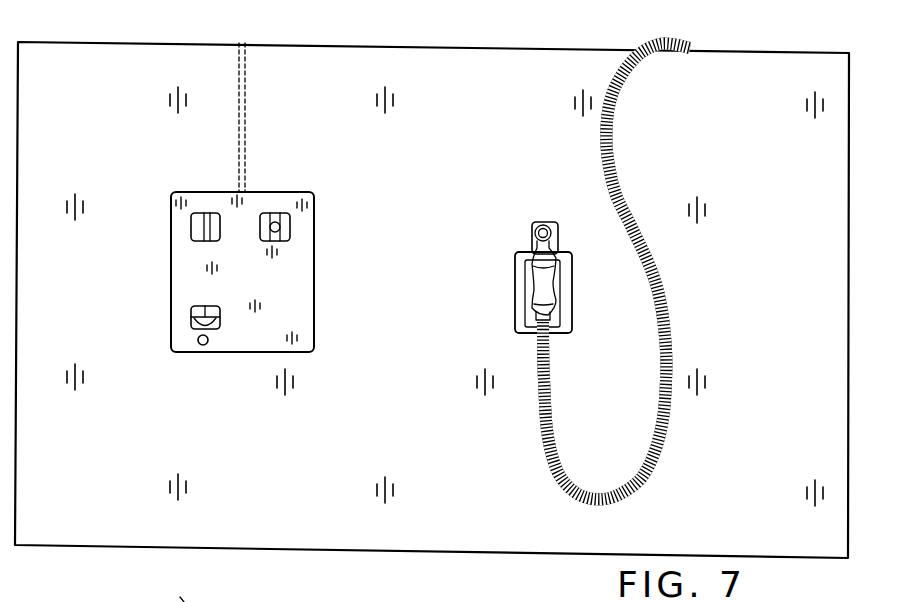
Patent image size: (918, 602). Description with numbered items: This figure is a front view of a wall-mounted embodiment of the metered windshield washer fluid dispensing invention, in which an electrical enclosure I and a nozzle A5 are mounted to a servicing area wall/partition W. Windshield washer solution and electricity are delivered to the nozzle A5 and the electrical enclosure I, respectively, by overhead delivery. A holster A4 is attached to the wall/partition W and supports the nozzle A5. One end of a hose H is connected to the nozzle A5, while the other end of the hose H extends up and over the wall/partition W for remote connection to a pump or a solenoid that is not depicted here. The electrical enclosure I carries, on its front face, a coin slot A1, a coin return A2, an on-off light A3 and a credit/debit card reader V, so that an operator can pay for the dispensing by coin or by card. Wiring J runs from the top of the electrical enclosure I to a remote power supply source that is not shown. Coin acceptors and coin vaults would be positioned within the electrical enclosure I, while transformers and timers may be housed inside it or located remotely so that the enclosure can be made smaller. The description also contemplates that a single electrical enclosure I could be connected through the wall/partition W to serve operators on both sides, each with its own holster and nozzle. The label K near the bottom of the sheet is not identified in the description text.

The wall/partition W is at (846, 552).
The electrical enclosure I is at (170, 196).
The wiring J is at (239, 67).
The coin slot A1 is at (191, 226).
The credit/debit card reader V is at (276, 216).
The coin return A2 is at (191, 309).
The on-off light A3 is at (202, 346).
The holster A4 is at (530, 240).
The nozzle A5 is at (540, 288).
The hose H is at (617, 176).
The floor/kick plate K is at (171, 591).